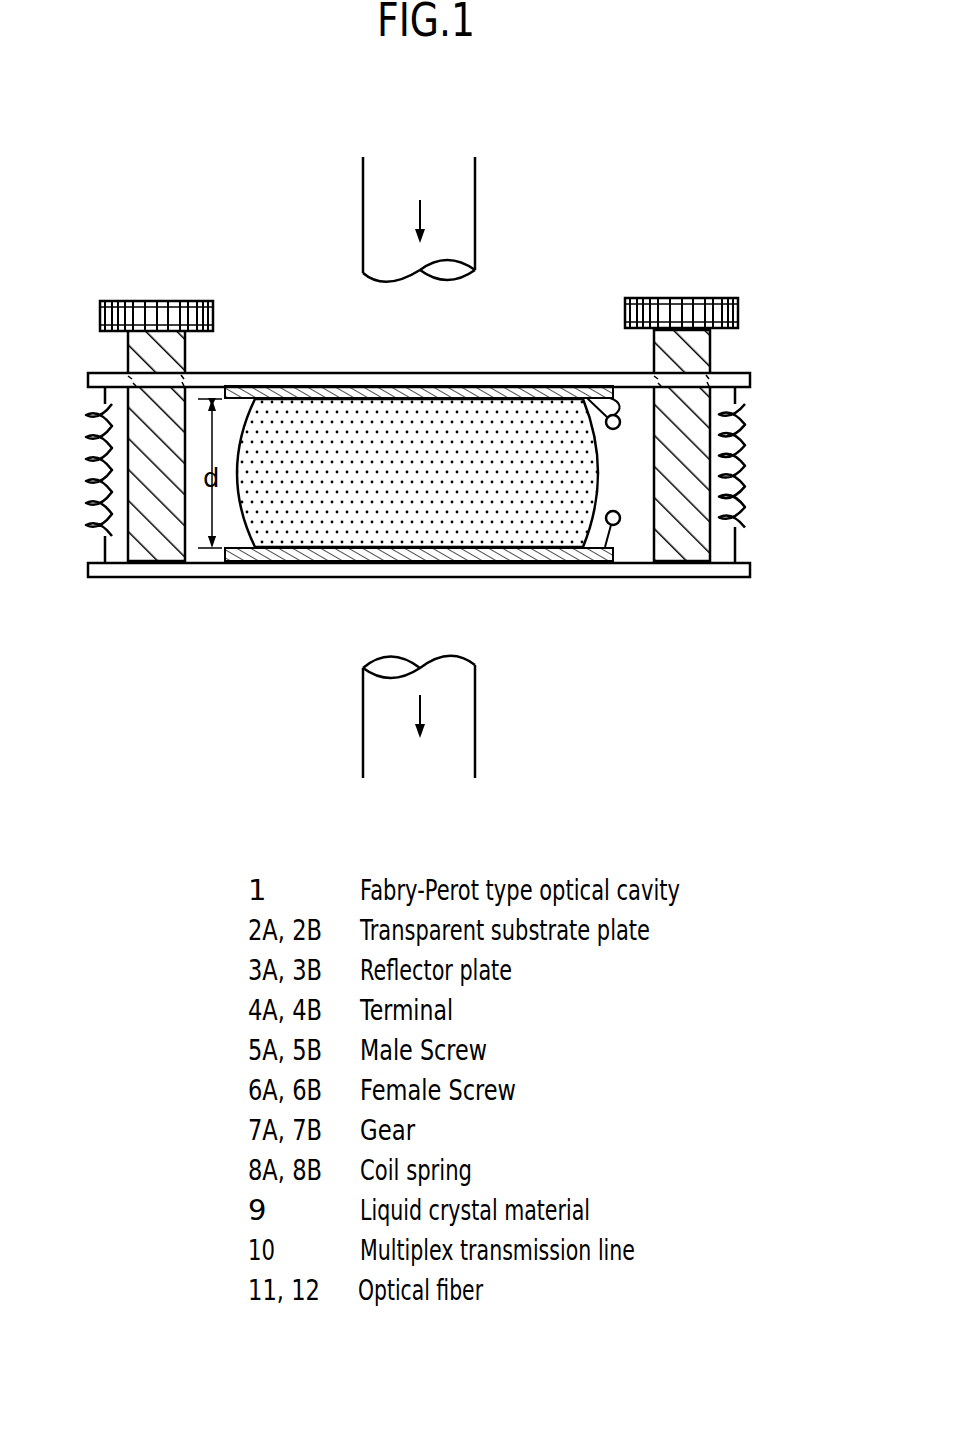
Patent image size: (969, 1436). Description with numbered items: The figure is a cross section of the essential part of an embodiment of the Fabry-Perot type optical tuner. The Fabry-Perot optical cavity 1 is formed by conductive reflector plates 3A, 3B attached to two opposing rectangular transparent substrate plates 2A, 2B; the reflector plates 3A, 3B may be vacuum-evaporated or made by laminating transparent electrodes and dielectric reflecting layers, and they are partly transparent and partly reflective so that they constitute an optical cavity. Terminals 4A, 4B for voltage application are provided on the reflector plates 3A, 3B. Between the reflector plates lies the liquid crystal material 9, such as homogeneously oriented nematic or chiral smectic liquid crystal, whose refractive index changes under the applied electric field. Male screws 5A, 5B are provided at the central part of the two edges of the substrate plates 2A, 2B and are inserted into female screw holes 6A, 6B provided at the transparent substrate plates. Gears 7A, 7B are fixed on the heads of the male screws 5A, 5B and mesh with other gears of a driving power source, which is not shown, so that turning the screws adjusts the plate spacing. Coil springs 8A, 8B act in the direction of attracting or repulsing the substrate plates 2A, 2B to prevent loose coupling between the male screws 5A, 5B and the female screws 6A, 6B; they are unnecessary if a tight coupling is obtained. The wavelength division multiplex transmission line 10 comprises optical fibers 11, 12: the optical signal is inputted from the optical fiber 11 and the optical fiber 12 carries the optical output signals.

The Fabry-Perot optical cavity 1 is at (828, 458).
The transparent substrate plate 2A is at (746, 372).
The transparent substrate plate 2B is at (737, 577).
The reflector plate 3A is at (432, 386).
The reflector plate 3B is at (432, 562).
The terminal 4A is at (575, 397).
The terminal 4B is at (618, 524).
The male screw 5A is at (152, 553).
The male screw 5B is at (680, 553).
The female screw hole 6A is at (128, 378).
The female screw hole 6B is at (655, 377).
The gear 7A is at (152, 300).
The gear 7B is at (676, 297).
The coil spring 8A is at (92, 528).
The coil spring 8B is at (745, 513).
The liquid crystal material 9 is at (590, 460).
The wavelength division multiplex transmission line 10 is at (608, 188).
The optical fiber 11 is at (363, 200).
The optical fiber 12 is at (363, 706).